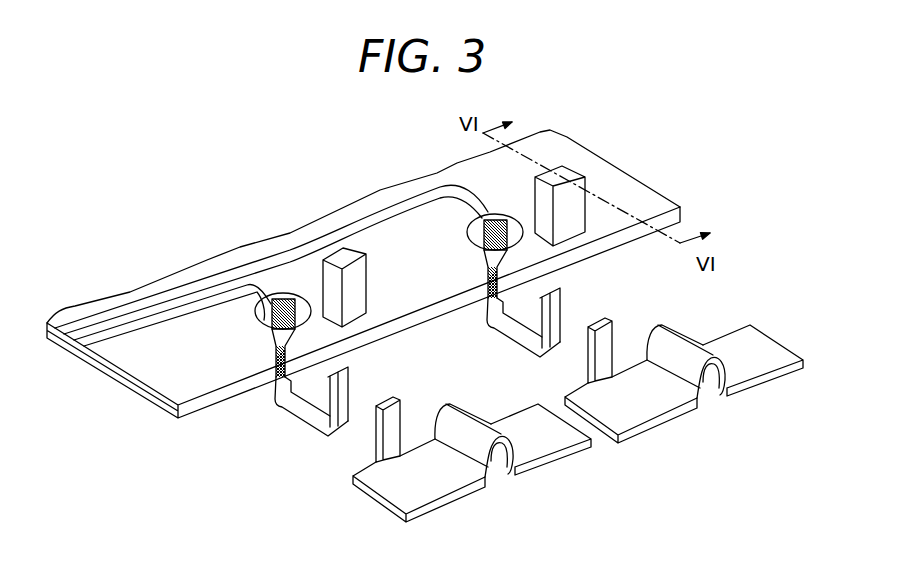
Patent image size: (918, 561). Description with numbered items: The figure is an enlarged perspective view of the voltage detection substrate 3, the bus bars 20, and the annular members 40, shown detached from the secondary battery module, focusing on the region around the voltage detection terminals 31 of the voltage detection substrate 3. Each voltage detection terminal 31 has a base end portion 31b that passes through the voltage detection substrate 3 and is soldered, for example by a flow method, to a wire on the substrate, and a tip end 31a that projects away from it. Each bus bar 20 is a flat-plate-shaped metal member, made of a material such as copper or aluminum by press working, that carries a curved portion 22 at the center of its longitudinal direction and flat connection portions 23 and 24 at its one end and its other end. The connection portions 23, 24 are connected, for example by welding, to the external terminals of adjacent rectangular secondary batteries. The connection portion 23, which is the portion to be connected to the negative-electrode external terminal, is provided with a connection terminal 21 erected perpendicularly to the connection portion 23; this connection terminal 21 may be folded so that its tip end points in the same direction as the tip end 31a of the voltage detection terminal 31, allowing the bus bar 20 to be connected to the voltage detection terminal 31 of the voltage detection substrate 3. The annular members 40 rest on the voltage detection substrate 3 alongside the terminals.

The voltage detection substrate 3 is at (147, 367).
The bus bar 20 is at (362, 505).
The connection terminal 21 is at (377, 442).
The curved portion 22 is at (477, 416).
The connection portion 23 is at (427, 487).
The connection portion 24 is at (534, 445).
The voltage detection terminal 31 is at (301, 416).
The tip end 31a is at (352, 365).
The base end portion 31b is at (282, 303).
The annular member 40 is at (340, 250).